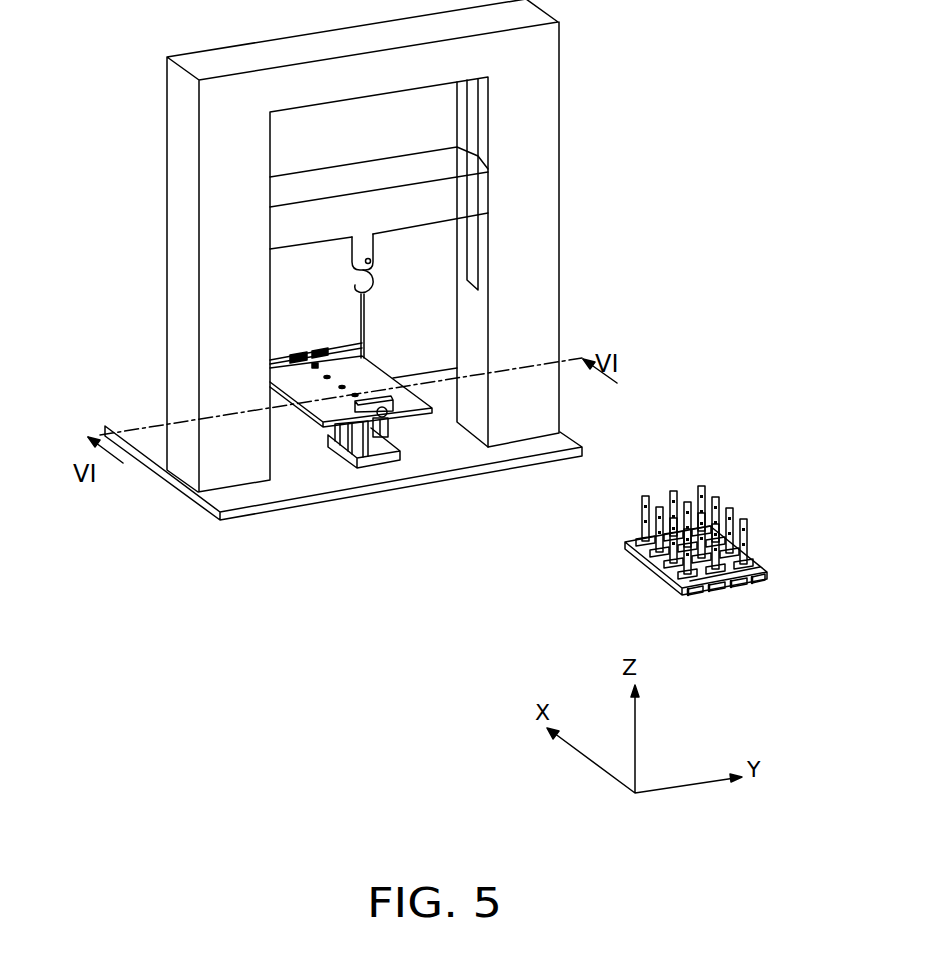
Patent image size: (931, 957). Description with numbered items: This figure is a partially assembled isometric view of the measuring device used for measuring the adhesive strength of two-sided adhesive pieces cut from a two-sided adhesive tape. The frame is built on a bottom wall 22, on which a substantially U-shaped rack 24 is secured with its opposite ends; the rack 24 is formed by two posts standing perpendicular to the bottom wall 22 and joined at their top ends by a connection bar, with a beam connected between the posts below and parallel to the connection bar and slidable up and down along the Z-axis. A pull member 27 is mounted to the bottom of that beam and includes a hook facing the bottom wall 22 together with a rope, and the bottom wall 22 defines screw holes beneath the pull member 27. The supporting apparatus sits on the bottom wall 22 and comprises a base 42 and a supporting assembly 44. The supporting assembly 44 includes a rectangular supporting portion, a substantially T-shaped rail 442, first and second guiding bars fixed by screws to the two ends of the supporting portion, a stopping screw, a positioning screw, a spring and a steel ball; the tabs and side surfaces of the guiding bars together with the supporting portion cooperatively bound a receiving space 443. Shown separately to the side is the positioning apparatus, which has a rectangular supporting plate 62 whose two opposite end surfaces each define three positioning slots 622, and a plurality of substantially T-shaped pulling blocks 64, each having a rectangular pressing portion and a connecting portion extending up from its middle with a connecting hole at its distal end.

The bottom wall 22 is at (278, 507).
The rack 24 is at (212, 187).
The pull member 27 is at (363, 250).
The base 42 is at (378, 455).
The supporting assembly 44 is at (304, 439).
The T-shaped rail 442 is at (393, 433).
The receiving space 443 is at (270, 380).
The supporting plate 62 is at (714, 562).
The positioning slots 622 is at (705, 593).
The pulling blocks 64 is at (747, 548).